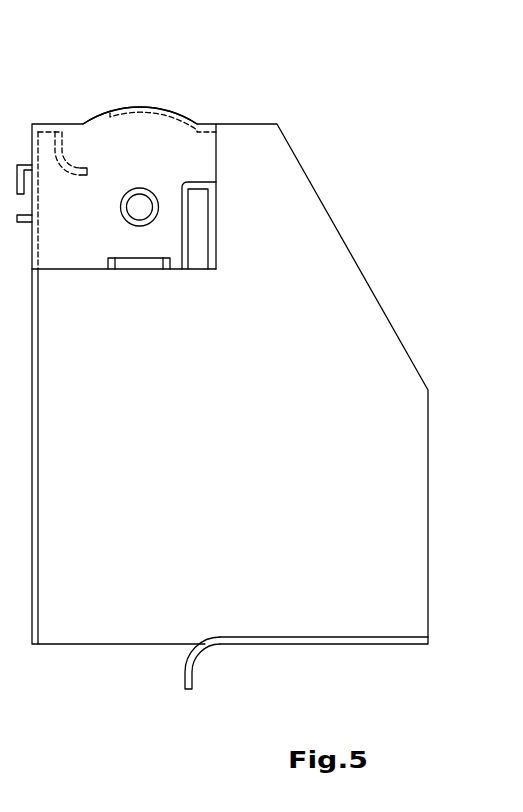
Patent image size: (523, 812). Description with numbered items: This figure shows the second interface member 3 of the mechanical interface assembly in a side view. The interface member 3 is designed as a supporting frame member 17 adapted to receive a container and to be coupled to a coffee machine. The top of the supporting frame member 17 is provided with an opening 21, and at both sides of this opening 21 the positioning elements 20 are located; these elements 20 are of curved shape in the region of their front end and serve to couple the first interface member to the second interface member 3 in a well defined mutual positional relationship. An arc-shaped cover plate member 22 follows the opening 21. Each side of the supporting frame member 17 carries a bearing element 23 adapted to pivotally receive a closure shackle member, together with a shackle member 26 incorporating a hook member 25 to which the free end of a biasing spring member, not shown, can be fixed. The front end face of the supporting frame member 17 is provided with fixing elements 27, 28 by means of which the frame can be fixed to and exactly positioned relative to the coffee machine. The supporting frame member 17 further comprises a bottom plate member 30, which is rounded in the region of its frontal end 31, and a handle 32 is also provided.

The second interface member 3 is at (208, 75).
The supporting frame member 17 is at (355, 212).
The positioning elements 20 is at (64, 173).
The opening 21 is at (83, 102).
The arc-shaped cover plate member 22 is at (136, 107).
The bearing element 23 is at (135, 200).
The hook member 25 is at (139, 270).
The shackle member 26 is at (113, 270).
The fixing element 27 is at (22, 167).
The fixing element 28 is at (22, 222).
The bottom plate member 30 is at (268, 642).
The frontal end 31 is at (185, 682).
The handle 32 is at (198, 226).